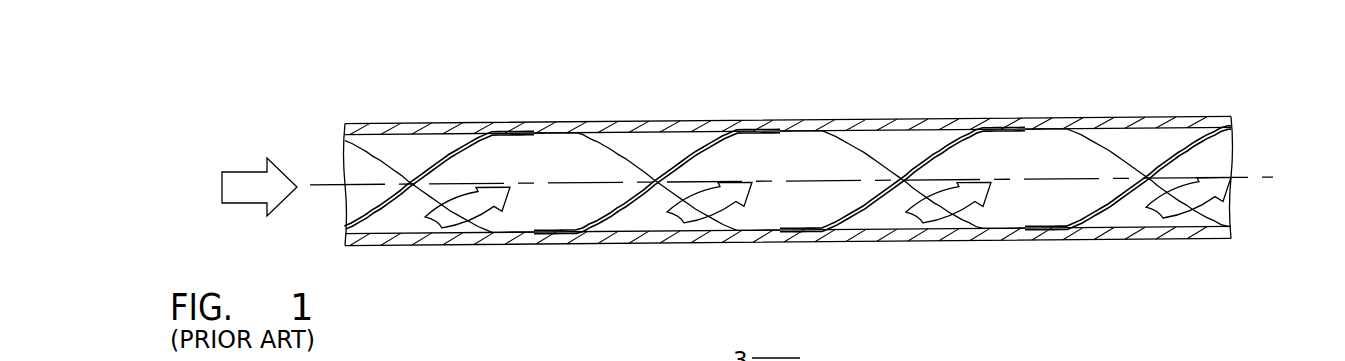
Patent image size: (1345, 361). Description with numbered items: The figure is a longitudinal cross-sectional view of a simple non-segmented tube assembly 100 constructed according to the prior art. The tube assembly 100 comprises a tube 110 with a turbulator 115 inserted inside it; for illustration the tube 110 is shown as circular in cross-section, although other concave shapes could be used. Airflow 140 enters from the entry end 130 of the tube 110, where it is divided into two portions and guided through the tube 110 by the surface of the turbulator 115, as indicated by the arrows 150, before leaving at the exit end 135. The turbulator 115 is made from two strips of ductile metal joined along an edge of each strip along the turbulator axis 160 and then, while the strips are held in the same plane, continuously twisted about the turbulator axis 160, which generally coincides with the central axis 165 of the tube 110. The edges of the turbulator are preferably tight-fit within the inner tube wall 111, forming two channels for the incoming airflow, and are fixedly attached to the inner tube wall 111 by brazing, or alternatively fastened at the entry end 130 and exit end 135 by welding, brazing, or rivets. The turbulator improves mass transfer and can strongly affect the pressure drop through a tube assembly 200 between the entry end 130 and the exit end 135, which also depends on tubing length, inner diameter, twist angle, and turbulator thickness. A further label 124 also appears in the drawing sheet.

In FIG. 1, the tube assembly 100 is at (1137, 93).
In FIG. 1, the tube 110 is at (975, 128).
In FIG. 2, the tube 110 is at (1032, 354).
In FIG. 1, the inner tube wall 111 is at (896, 228).
In FIG. 1, the turbulator 115 is at (853, 137).
In FIG. 1, the entry end 130 is at (300, 136).
In FIG. 1, the exit end 135 is at (1242, 129).
In FIG. 1, the airflow 140 is at (244, 204).
In FIG. 1, the arrows 150 is at (447, 224).
In FIG. 1, the turbulator axis 160 is at (596, 182).
In FIG. 1, the central axis 165 is at (333, 188).
In FIG. 2, the tube assembly 200 is at (1157, 357).
In FIG. 2, the tube component 124 is at (898, 354).